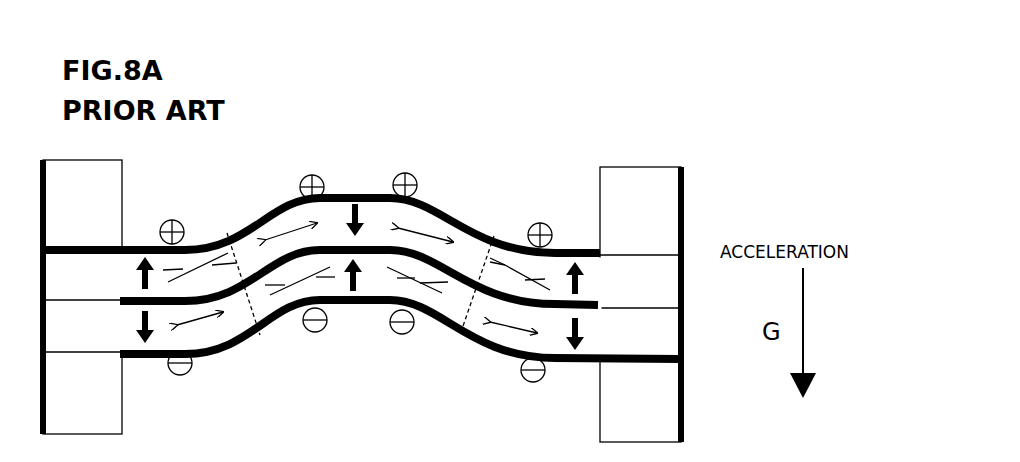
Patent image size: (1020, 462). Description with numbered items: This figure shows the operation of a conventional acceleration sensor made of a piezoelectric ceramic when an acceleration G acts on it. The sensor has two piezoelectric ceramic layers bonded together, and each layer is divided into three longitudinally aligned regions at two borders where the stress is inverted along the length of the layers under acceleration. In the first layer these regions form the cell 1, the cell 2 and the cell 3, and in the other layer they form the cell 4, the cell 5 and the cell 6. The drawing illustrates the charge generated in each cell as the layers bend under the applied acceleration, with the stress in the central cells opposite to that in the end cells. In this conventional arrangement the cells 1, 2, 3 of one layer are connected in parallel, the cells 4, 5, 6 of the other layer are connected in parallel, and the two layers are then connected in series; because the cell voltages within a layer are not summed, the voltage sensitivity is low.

The cell 1 is at (132, 273).
The cell 2 is at (368, 220).
The cell 3 is at (592, 278).
The cell 4 is at (131, 327).
The cell 5 is at (365, 275).
The cell 6 is at (592, 334).